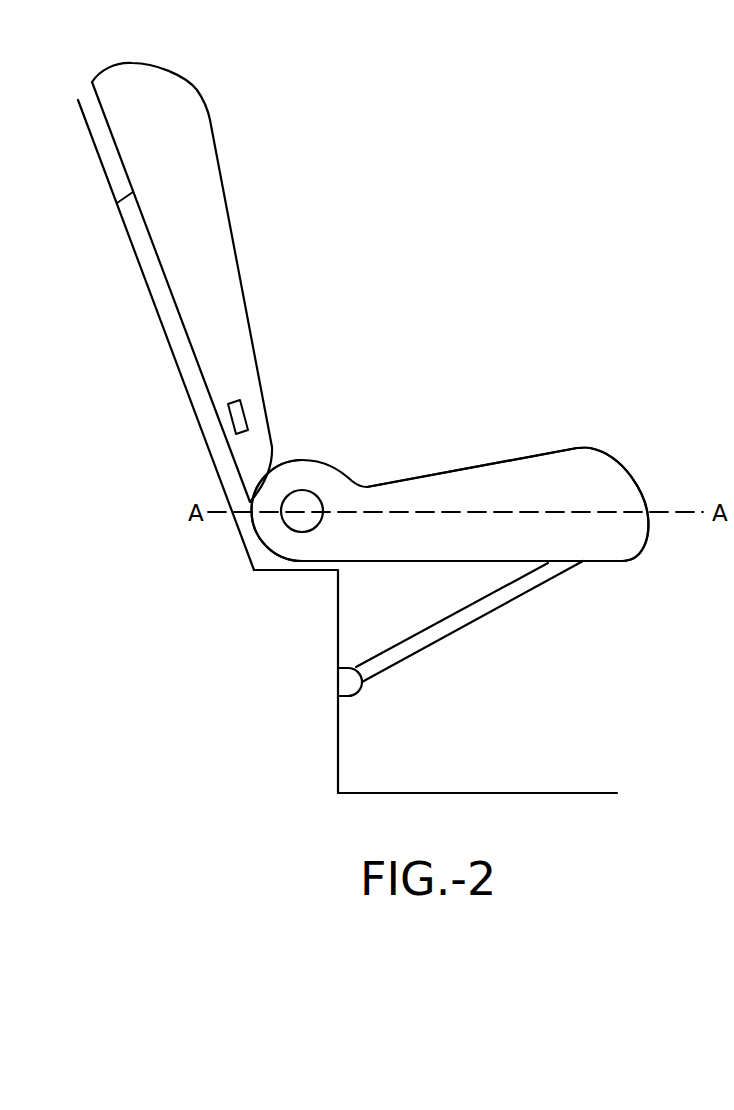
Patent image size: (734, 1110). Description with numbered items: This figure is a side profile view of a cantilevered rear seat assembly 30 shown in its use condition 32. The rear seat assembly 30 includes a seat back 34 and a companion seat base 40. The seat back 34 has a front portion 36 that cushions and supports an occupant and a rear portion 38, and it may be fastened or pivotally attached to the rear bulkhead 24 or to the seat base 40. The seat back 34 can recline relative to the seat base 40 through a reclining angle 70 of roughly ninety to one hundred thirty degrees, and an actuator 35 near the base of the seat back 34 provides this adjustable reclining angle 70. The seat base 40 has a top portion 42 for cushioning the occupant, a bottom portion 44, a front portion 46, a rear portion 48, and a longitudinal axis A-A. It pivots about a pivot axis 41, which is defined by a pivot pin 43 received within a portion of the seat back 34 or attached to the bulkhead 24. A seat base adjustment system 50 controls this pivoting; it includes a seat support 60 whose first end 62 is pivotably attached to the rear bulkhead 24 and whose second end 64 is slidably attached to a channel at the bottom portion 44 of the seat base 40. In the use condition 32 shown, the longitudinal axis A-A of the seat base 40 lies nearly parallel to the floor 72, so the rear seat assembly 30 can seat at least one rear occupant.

The rear bulkhead 24 is at (338, 757).
The rear seat assembly 30 is at (362, 192).
The use condition 32 is at (333, 303).
The seat back 34 is at (130, 152).
The actuator 35 is at (233, 418).
The front portion of seat back 36 is at (210, 128).
The rear portion of seat back 38 is at (133, 192).
The seat base 40 is at (517, 470).
The pivot axis 41 is at (307, 512).
The top portion of seat base 42 is at (473, 467).
The pivot pin 43 is at (292, 524).
The bottom portion of seat base 44 is at (598, 562).
The front portion of seat base 46 is at (605, 450).
The rear portion of seat base 48 is at (252, 532).
The seat base adjustment system 50 is at (525, 643).
The seat support 60 is at (463, 628).
The first end of seat support 62 is at (357, 693).
The second end of seat support 64 is at (588, 577).
The reclining angle 70 is at (453, 465).
The floor 72 is at (573, 793).